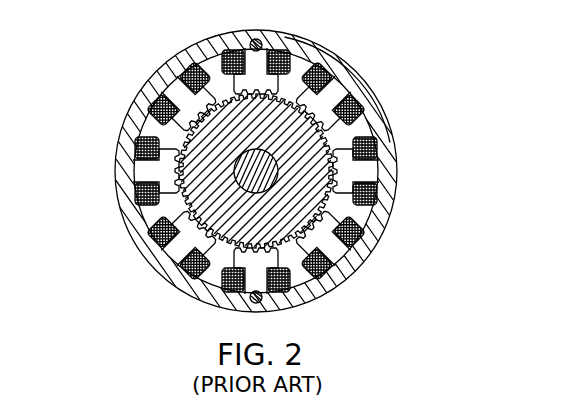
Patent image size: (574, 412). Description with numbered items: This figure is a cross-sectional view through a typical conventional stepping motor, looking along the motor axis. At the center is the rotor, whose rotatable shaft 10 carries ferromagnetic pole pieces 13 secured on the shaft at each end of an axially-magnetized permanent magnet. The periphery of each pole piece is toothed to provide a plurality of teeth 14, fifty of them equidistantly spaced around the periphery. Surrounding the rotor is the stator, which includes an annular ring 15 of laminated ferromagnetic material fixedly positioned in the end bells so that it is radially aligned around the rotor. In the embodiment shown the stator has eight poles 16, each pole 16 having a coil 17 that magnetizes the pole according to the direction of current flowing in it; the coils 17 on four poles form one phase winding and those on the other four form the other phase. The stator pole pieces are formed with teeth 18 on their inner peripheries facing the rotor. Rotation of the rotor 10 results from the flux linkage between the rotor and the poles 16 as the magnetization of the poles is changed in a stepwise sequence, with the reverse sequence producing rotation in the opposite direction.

The rotatable shaft 10 is at (187, 195).
The ferromagnetic pole pieces 13 is at (234, 176).
The teeth 14 is at (256, 171).
The annular ring 15 is at (330, 90).
The poles 16 is at (182, 100).
The coil 17 is at (380, 128).
The teeth 18 is at (352, 266).